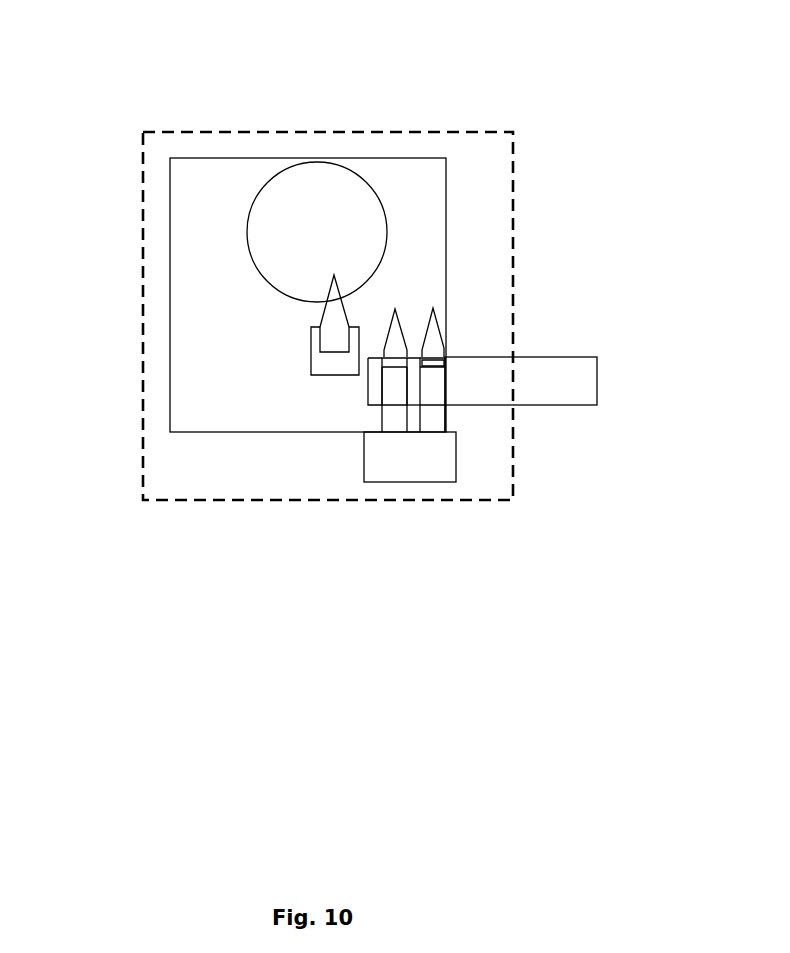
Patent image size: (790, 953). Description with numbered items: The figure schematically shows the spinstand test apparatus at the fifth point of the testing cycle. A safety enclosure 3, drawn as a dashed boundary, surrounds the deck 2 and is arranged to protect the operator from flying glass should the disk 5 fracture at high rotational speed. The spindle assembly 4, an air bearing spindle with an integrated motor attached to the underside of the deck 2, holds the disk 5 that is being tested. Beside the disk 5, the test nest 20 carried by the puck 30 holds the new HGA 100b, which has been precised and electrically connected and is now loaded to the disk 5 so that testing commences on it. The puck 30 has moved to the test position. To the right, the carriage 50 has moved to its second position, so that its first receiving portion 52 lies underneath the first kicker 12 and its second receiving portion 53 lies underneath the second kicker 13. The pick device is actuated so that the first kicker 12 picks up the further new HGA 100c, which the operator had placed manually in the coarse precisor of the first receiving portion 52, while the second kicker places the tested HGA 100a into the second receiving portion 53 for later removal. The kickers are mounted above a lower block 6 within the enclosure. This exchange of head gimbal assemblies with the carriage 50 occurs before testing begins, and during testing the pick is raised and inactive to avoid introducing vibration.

The deck 2 is at (403, 157).
The safety enclosure 3 is at (200, 128).
The spindle assembly 4 is at (328, 152).
The disk 5 is at (307, 185).
The base block 6 is at (412, 450).
The first kicker 12 is at (390, 412).
The second kicker 13 is at (432, 423).
The test nest 20 is at (208, 391).
The puck 30 is at (323, 363).
The carriage 50 is at (598, 385).
The first receiving portion 52 is at (436, 374).
The second receiving portion 53 is at (393, 382).
The tested HGA 100a is at (395, 332).
The new HGA 100b is at (338, 315).
The further new HGA 100c is at (440, 323).